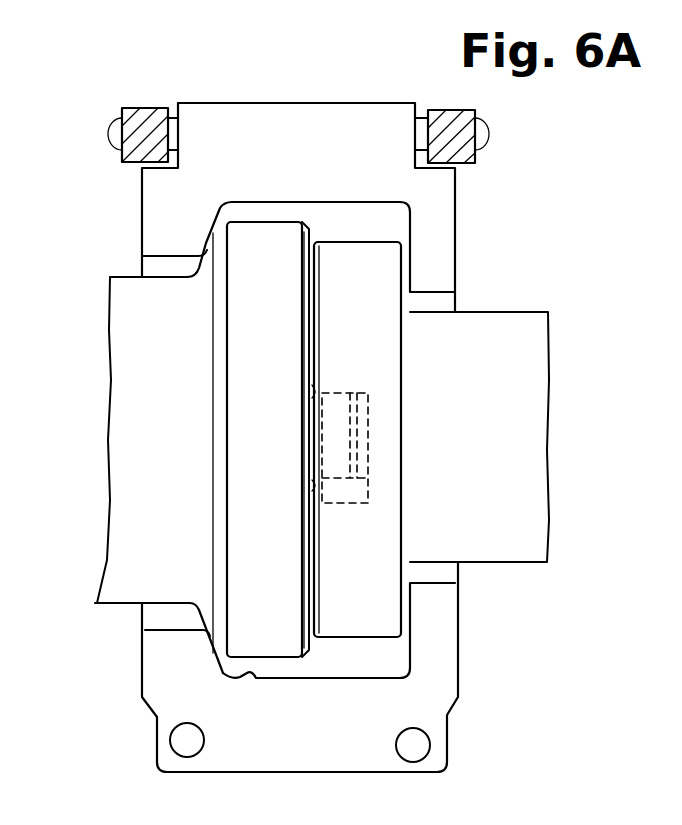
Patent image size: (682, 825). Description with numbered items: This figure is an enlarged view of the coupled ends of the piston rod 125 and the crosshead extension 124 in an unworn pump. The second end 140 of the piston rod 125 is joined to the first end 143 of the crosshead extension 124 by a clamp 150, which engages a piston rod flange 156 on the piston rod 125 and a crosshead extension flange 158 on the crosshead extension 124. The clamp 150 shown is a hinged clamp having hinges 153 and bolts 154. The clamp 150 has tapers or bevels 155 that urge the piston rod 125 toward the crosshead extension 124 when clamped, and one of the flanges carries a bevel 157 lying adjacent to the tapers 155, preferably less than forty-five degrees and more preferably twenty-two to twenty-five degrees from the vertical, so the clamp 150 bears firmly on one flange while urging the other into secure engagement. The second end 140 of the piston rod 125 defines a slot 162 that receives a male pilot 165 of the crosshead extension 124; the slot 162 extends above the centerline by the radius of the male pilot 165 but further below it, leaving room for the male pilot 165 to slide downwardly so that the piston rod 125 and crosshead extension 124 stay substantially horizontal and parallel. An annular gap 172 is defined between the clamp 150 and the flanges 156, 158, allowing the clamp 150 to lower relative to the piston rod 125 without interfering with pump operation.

The crosshead extension 124 is at (128, 293).
The piston rod 125 is at (490, 372).
The second end of the piston rod 140 is at (310, 252).
The first end of the crosshead extension 143 is at (320, 313).
The clamp 150 is at (371, 125).
The hinges 153 is at (143, 122).
The bolts 154 is at (180, 742).
The tapers or bevels 155 is at (223, 208).
The piston rod flange 156 is at (385, 442).
The bevel 157 is at (203, 258).
The crosshead extension flange 158 is at (240, 383).
The slot 162 is at (336, 500).
The male pilot 165 is at (332, 403).
The annular gap 172 is at (250, 200).